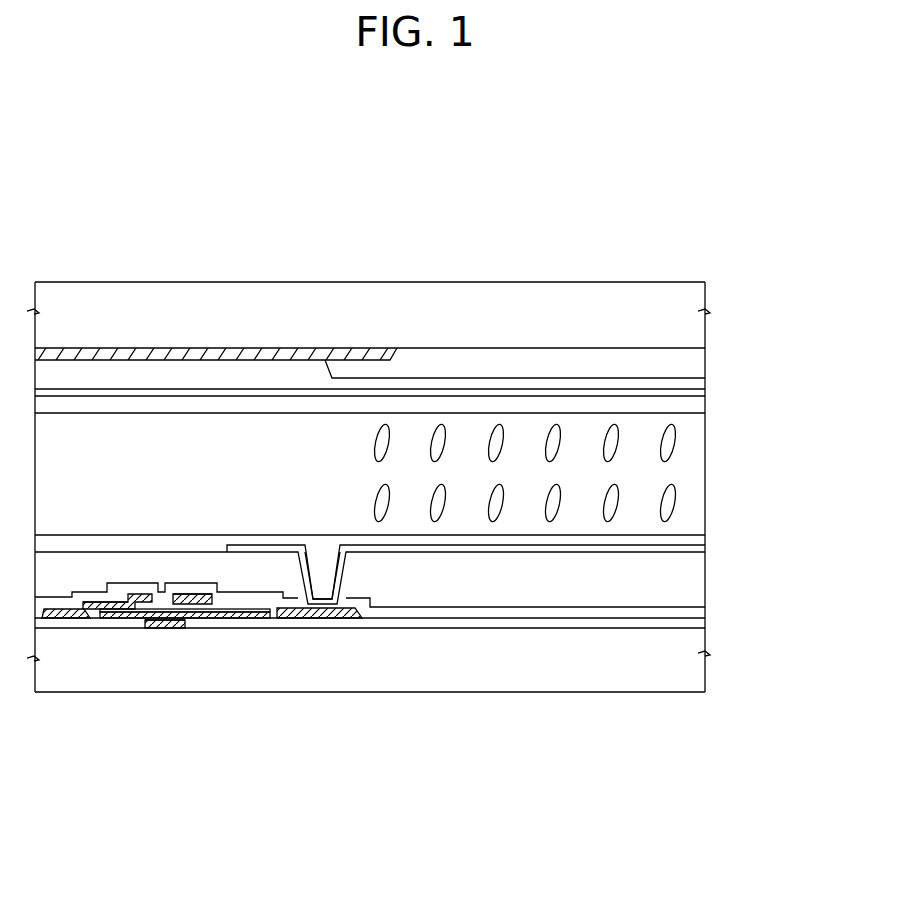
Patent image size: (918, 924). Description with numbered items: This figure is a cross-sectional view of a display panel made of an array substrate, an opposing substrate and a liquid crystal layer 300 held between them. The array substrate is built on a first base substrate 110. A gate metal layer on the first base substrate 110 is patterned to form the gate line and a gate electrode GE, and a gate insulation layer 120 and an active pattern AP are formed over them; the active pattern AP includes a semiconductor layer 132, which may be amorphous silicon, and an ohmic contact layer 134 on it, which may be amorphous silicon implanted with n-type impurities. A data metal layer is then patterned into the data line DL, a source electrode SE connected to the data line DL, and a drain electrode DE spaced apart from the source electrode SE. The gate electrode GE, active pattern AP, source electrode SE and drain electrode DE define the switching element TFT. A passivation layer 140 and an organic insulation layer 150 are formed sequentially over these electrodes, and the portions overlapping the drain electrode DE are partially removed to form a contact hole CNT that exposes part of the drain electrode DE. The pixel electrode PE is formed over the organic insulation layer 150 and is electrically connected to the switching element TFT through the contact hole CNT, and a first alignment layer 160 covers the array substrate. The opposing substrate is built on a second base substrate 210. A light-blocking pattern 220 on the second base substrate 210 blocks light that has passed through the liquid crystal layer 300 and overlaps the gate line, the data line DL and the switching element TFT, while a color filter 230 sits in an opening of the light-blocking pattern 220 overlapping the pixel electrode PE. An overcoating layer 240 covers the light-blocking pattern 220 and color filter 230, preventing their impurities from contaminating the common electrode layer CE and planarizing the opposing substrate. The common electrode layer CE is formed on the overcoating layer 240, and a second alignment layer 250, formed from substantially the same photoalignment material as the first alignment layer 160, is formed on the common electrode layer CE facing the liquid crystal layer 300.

The second base substrate 210 is at (172, 313).
The light-blocking pattern 220 is at (266, 357).
The color filter 230 is at (376, 367).
The overcoating layer 240 is at (445, 383).
The common electrode layer CE is at (509, 395).
The second alignment layer 250 is at (574, 406).
The liquid crystal layer 300 is at (715, 413).
The first alignment layer 160 is at (707, 536).
The pixel electrode PE is at (707, 549).
The organic insulation layer 150 is at (707, 575).
The passivation layer 140 is at (707, 607).
The gate insulation layer 120 is at (707, 618).
The first base substrate 110 is at (707, 650).
The gate electrode GE is at (162, 628).
The data line DL is at (63, 618).
The active pattern AP is at (209, 697).
The semiconductor layer 132 is at (218, 616).
The ohmic contact layer 134 is at (240, 610).
The source electrode SE is at (107, 612).
The drain electrode DE is at (210, 610).
The contact hole CNT is at (314, 578).
The switching element TFT is at (290, 792).